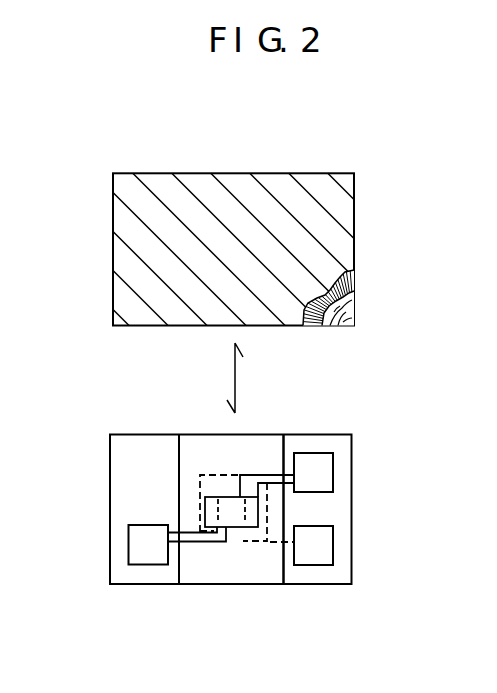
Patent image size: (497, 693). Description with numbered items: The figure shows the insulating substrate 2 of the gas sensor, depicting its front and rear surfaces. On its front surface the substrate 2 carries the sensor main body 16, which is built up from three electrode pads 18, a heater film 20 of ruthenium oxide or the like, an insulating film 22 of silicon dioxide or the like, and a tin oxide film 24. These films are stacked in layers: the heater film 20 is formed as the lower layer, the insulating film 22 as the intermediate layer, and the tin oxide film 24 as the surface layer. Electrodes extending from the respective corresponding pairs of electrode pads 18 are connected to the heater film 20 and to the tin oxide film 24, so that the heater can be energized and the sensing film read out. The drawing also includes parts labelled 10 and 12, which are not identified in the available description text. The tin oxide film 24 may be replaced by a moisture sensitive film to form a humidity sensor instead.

The upper die / punch body 10 is at (267, 180).
The weld bead 12 is at (351, 288).
The insulating substrate 2 is at (348, 312).
The sensor main body 16 is at (312, 584).
The electrode pads 18 is at (137, 544).
The heater film 20 is at (228, 475).
The insulating film 22 is at (213, 573).
The SnO2 film 24 is at (230, 522).